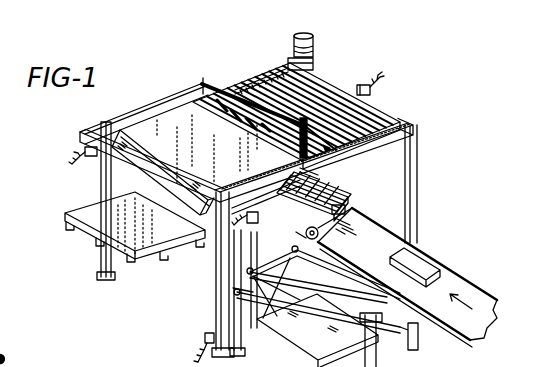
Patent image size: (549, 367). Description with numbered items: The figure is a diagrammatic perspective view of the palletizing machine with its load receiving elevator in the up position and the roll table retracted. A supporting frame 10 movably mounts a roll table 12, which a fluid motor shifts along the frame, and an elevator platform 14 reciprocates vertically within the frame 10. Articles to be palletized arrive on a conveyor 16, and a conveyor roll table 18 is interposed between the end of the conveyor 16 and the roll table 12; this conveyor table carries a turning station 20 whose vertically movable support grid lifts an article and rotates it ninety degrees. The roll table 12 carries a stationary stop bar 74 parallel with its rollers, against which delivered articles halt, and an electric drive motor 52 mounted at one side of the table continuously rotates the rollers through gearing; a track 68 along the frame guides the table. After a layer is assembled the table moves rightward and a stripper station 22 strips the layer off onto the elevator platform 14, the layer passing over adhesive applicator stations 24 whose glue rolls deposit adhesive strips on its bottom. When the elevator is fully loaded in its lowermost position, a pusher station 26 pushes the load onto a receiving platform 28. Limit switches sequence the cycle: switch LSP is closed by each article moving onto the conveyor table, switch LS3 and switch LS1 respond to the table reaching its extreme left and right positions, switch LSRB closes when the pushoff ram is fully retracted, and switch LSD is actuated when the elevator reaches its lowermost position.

The supporting frame 10 is at (418, 191).
The roll table 12 is at (386, 110).
The elevator platform 14 is at (160, 125).
The conveyor 16 is at (466, 291).
The conveyor roll table 18 is at (348, 190).
The turning station 20 is at (327, 179).
The stripper station 22 is at (206, 82).
The adhesive applicator stations 24 is at (214, 117).
The pusher station 26 is at (250, 250).
The receiving platform 28 is at (88, 225).
The electric drive motor 52 is at (303, 33).
The track 68 is at (285, 148).
The stationary stop bar 74 is at (312, 74).
The limit switch LS1 is at (372, 92).
The limit switch LS3 is at (90, 158).
The limit switch LSP is at (346, 208).
The limit switch LSRB is at (256, 225).
The limit switch LSD is at (204, 338).